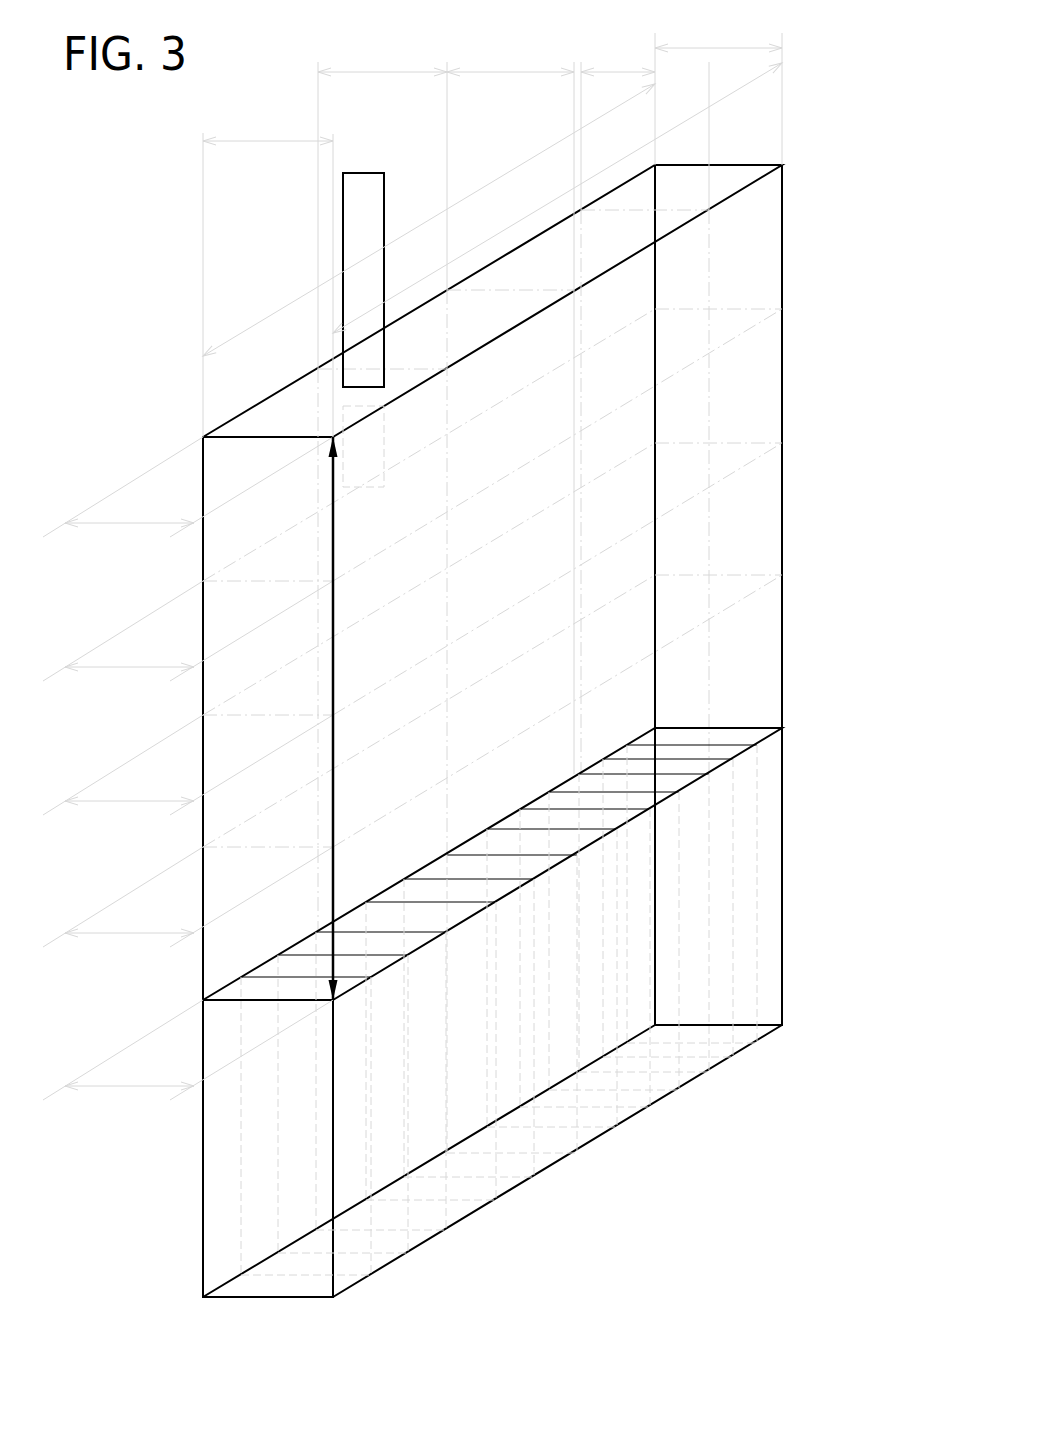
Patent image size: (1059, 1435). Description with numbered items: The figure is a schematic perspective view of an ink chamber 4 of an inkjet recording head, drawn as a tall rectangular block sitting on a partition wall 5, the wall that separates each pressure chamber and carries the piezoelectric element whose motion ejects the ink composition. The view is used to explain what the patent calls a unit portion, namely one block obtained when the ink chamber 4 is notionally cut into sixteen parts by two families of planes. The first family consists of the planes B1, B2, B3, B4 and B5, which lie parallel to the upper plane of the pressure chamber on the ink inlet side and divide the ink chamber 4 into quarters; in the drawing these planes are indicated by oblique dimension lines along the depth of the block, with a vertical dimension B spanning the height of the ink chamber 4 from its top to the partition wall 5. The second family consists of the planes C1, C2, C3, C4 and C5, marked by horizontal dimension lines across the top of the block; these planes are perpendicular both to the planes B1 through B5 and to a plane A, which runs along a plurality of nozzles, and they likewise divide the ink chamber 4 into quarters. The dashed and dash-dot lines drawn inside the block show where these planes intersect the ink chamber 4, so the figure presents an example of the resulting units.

The ink chamber 4 is at (753, 528).
The partition wall 5 is at (740, 923).
The plane A is at (492, 209).
The plane B is at (345, 718).
The plane B1 is at (188, 497).
The plane B2 is at (188, 641).
The plane B3 is at (188, 775).
The plane B4 is at (188, 907).
The plane B5 is at (188, 1060).
The plane C1 is at (268, 124).
The plane C2 is at (382, 57).
The plane C3 is at (510, 57).
The plane C4 is at (618, 59).
The plane C5 is at (718, 32).